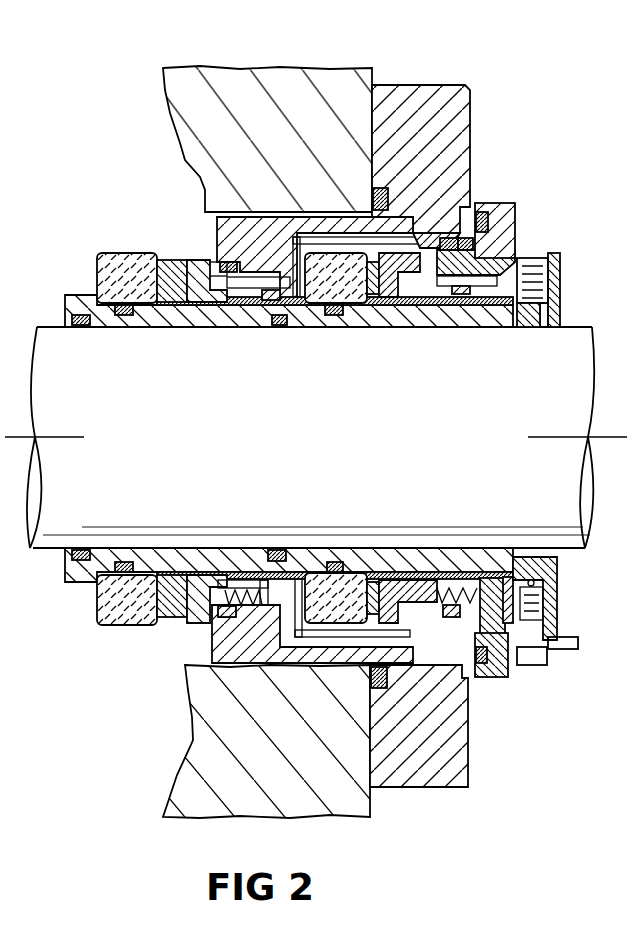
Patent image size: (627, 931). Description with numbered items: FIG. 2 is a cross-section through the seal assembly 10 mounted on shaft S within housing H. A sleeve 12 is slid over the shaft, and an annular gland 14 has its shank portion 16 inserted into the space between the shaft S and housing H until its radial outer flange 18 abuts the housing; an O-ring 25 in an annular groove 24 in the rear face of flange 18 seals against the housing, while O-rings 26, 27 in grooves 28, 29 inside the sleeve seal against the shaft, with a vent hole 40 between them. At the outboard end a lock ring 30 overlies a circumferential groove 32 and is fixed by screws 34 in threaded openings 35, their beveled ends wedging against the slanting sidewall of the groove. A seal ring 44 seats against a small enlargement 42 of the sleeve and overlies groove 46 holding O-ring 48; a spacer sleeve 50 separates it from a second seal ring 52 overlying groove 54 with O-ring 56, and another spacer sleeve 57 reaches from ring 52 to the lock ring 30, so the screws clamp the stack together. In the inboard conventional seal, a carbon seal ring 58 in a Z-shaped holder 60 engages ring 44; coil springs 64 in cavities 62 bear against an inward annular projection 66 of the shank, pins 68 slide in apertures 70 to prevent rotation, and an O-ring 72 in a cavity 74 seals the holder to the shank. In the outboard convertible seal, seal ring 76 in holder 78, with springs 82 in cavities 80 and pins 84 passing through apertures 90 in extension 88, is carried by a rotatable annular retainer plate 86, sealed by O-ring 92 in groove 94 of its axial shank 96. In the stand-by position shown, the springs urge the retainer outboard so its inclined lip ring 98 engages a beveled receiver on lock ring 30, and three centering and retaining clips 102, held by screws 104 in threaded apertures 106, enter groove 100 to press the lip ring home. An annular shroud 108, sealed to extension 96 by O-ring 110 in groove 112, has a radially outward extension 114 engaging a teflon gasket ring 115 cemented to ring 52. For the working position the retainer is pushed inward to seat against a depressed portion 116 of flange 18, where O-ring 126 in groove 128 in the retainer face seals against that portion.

The seal assembly 10 is at (133, 642).
The sleeve 12 is at (566, 318).
The annular gland 14 is at (427, 84).
The shank portion 16 is at (213, 223).
The radial outer flange 18 is at (392, 90).
The annular groove 24 is at (373, 194).
The O-ring 25 is at (378, 187).
The O-ring 26 is at (78, 330).
The O-ring 27 is at (280, 327).
The annular radial groove 28 is at (90, 330).
The annular radial groove 29 is at (293, 327).
The lock ring 30 is at (560, 286).
The circumferential groove 32 is at (550, 310).
The screws 34 is at (545, 275).
The threaded openings 35 is at (530, 308).
The vent hole 40 is at (215, 310).
The small enlargement 42 is at (78, 293).
The seal ring 44 is at (138, 255).
The circumferential groove 46 is at (135, 330).
The O-ring 48 is at (126, 316).
The spacer sleeve 50 is at (205, 302).
The seal ring 52 is at (363, 580).
The circumferential groove 54 is at (330, 566).
The O-ring 56 is at (337, 566).
The spacer sleeve 57 is at (417, 330).
The seal ring 58 is at (162, 302).
The seal ring holder 60 is at (195, 330).
The tubular cavities 62 is at (217, 587).
The coil spring 64 is at (238, 592).
The inward annular projection 66 is at (267, 592).
The pin 68 is at (228, 317).
The aperture 70 is at (252, 282).
The O-ring 72 is at (218, 257).
The cavity 74 is at (240, 262).
The seal ring 76 is at (345, 312).
The holder 78 is at (402, 330).
The cavities 80 is at (428, 588).
The coil spring 82 is at (453, 588).
The pin 84 is at (470, 284).
The annular retainer plate 86 is at (517, 203).
The extension 88 is at (490, 586).
The apertures 90 is at (510, 300).
The O-ring 92 is at (447, 292).
The groove 94 is at (460, 270).
The axial shank 96 is at (440, 237).
The lip ring 98 is at (518, 258).
The groove 100 is at (498, 676).
The centering and retaining clips 102 is at (563, 648).
The screws 104 is at (540, 653).
The threaded apertures 106 is at (540, 587).
The annular shroud 108 is at (332, 233).
The O-ring 110 is at (462, 238).
The annular groove 112 is at (452, 240).
The radially outward extension 114 is at (280, 233).
The gasket ring 115 is at (302, 217).
The radially inner depressed portion 116 is at (482, 213).
The O-ring 126 is at (479, 665).
The groove 128 is at (498, 680).
The housing H is at (176, 98).
The shaft S is at (304, 452).